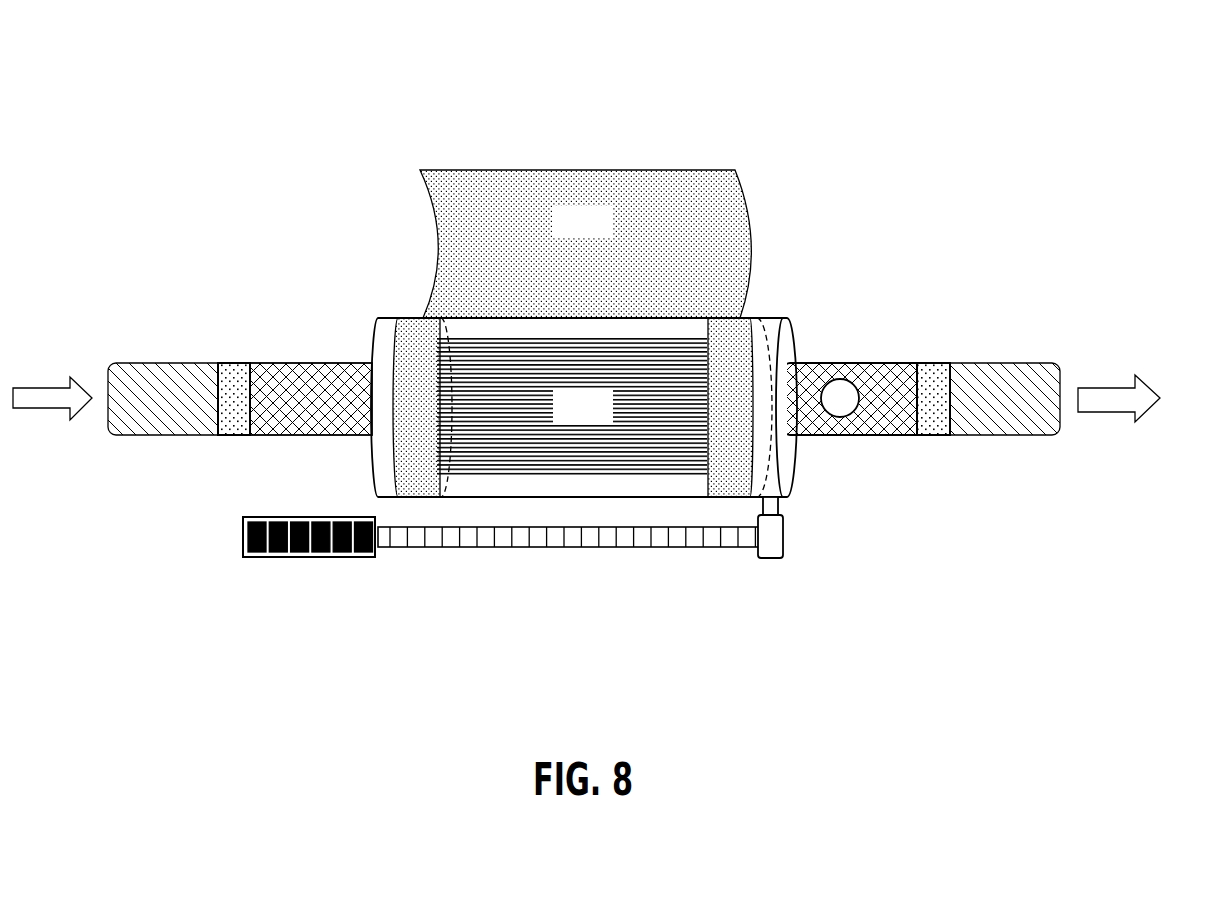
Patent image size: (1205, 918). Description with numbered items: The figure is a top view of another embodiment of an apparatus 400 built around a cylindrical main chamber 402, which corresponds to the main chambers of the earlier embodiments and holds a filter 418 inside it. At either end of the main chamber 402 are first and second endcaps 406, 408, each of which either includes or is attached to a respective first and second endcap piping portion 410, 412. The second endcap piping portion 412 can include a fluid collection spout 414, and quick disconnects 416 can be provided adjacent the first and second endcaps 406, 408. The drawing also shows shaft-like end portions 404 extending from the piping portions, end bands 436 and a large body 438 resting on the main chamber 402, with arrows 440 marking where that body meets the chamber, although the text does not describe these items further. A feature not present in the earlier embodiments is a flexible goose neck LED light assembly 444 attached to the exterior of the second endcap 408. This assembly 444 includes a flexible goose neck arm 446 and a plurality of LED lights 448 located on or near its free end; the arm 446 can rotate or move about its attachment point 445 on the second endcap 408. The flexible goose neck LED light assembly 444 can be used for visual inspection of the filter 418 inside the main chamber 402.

The apparatus 400 is at (607, 79).
The cylindrical main chamber 402 is at (506, 505).
The shaft / conduit 404 is at (165, 375).
The first endcap 406 is at (376, 452).
The second endcap 408 is at (793, 468).
The first endcap piping portion 410 is at (320, 372).
The second endcap piping portion 412 is at (893, 368).
The fluid collection spout 414 is at (843, 410).
The quick disconnects 416 is at (235, 427).
The filter 418 is at (609, 422).
The foam band 436 is at (402, 352).
The foam body 438 is at (609, 236).
The interface 440 is at (416, 311).
The flexible goose neck LED light assembly 444 is at (697, 567).
The attachment point 445 is at (789, 509).
The flexible goose neck arm 446 is at (472, 548).
The LED lights 448 is at (301, 566).